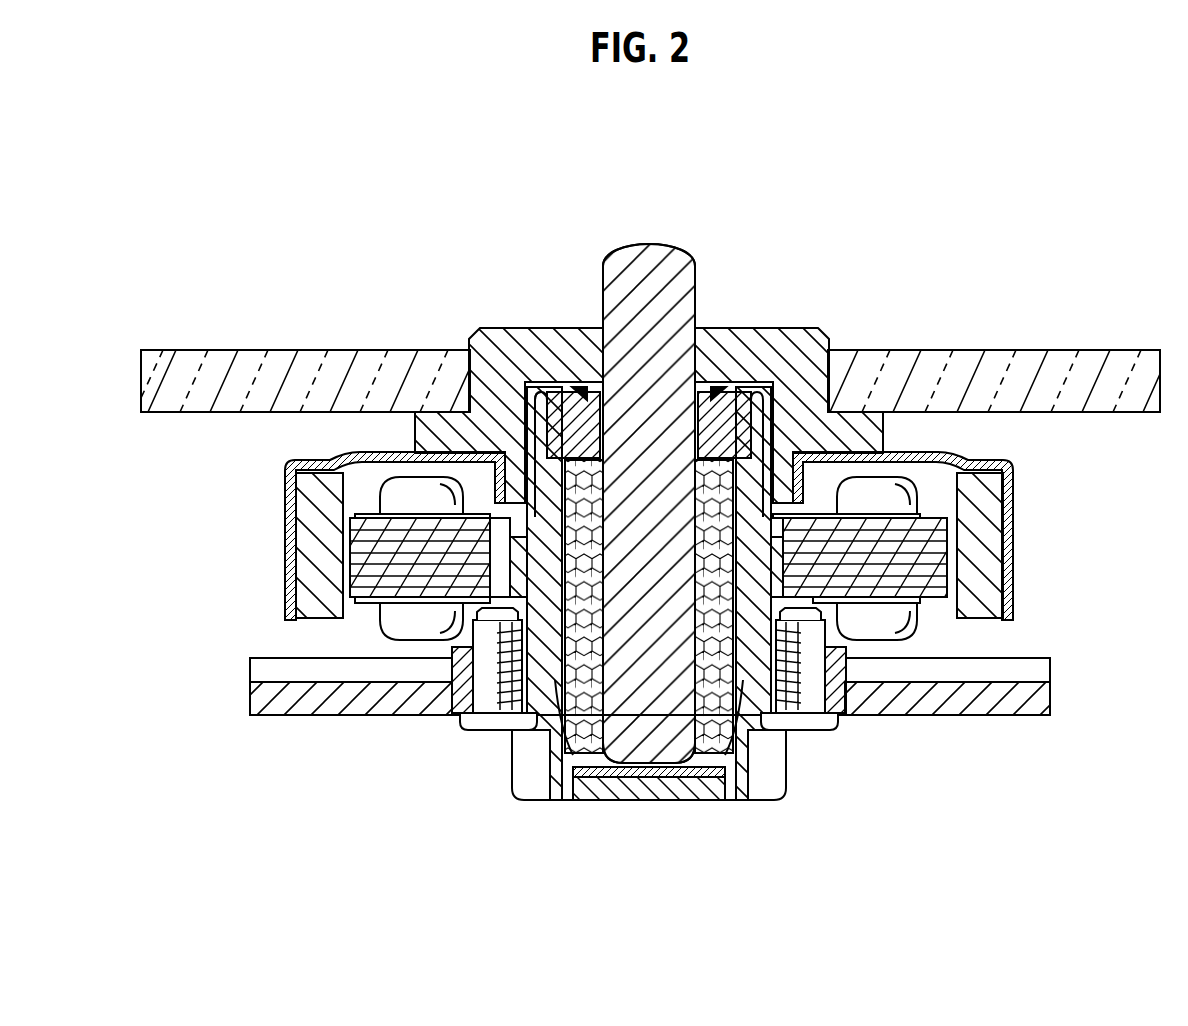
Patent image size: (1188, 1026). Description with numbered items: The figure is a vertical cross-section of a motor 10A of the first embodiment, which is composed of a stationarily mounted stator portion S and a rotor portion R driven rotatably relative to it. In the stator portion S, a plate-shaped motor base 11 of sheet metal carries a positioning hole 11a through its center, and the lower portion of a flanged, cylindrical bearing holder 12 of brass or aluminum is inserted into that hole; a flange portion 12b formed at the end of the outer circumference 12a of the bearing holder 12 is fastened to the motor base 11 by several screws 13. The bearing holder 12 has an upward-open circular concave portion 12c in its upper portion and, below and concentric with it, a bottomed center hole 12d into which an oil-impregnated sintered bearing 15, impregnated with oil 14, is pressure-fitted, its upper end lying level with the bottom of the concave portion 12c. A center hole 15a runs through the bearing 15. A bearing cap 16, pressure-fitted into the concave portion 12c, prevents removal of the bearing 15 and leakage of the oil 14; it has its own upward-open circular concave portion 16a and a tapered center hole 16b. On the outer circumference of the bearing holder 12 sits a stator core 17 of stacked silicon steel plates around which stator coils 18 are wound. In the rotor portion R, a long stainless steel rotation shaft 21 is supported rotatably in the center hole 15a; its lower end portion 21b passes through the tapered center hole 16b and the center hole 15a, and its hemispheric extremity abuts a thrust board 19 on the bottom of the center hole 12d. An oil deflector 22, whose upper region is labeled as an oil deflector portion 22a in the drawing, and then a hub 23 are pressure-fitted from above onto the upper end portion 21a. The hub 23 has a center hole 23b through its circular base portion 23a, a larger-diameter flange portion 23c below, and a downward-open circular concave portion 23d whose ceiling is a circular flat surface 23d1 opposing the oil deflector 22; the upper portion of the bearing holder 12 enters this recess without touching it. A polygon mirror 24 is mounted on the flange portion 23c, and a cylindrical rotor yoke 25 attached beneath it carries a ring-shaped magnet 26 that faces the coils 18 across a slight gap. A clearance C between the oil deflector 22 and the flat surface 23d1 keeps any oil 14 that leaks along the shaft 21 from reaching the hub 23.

The motor 10A is at (882, 135).
The motor base 11 is at (650, 752).
The positioning hole 11a is at (550, 725).
The bearing holder 12 is at (786, 762).
The outer circumference 12a is at (846, 660).
The flange portion 12b is at (840, 700).
The circular concave portion 12c is at (768, 440).
The bottomed center hole 12d is at (835, 395).
The screws 13 is at (478, 735).
The oil 14 is at (650, 792).
The oil-impregnated sintered bearing 15 is at (735, 802).
The center hole 15a is at (684, 772).
The bearing cap 16 is at (534, 448).
The circular concave portion 16a is at (545, 400).
The tapered center hole 16b is at (536, 395).
The stator core 17 is at (935, 615).
The stator coils 18 is at (945, 715).
The thrust board 19 is at (575, 740).
The rotation shaft 21 is at (650, 238).
The upper end portion 21a is at (628, 258).
The lower end portion 21b is at (632, 768).
The oil deflector 22 is at (714, 475).
The upper end face of bearing sleeve 22a is at (706, 385).
The hub 23 is at (704, 322).
The circular base portion 23a is at (550, 380).
The center hole 23b is at (592, 345).
The flange portion 23c is at (886, 428).
The circular concave portion 23d is at (750, 420).
The circular flat surface 23d1 is at (724, 388).
The polygon mirror 24 is at (1128, 365).
The rotor yoke 25 is at (1013, 520).
The magnet 26 is at (1003, 565).
The clearance C is at (718, 380).
The rotor portion R is at (390, 380).
The stator portion S is at (250, 745).